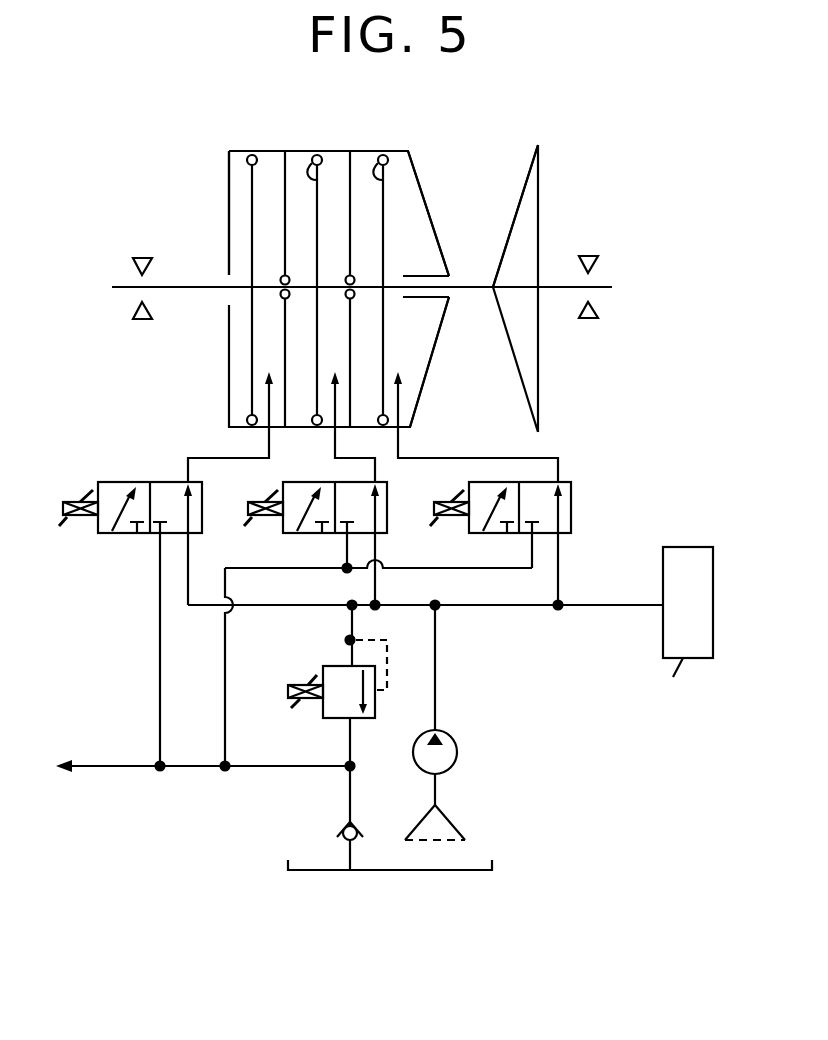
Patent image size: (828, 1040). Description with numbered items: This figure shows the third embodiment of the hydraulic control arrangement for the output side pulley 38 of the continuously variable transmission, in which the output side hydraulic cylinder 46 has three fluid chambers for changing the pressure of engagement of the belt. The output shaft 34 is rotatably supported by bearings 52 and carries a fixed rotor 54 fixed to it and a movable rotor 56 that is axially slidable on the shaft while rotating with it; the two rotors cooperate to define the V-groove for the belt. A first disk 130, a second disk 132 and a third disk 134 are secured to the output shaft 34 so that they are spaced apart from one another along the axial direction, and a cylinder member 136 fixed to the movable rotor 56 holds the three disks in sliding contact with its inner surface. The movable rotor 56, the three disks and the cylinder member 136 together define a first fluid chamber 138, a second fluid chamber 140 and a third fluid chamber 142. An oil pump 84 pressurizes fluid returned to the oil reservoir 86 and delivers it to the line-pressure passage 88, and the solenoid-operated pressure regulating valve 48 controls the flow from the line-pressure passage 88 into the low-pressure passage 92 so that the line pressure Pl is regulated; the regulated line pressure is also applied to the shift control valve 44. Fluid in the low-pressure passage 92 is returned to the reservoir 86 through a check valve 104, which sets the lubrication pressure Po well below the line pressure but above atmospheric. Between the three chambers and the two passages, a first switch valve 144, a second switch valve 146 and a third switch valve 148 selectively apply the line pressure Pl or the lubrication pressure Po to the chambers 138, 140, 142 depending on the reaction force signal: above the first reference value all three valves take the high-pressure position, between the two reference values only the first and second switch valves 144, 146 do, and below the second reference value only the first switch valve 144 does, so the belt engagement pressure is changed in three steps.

The output shaft 34 is at (563, 292).
The output side pulley 38 is at (576, 130).
The shift control valve 44 is at (690, 558).
The output side hydraulic cylinder 46 is at (200, 193).
The pressure regulating valve 48 is at (330, 666).
The bearings 52 is at (142, 256).
The fixed rotor 54 is at (528, 210).
The movable rotor 56 is at (430, 210).
The oil pump 84 is at (458, 752).
The oil reservoir 86 is at (492, 860).
The line-pressure passage 88 is at (468, 607).
The low-pressure passage 92 is at (183, 770).
The check valve 104 is at (340, 828).
The first disk 130 is at (370, 150).
The second disk 132 is at (305, 150).
The third disk 134 is at (252, 187).
The cylinder member 136 is at (273, 150).
The first fluid chamber 138 is at (413, 377).
The second fluid chamber 140 is at (340, 348).
The third fluid chamber 142 is at (262, 347).
The first switch valve 144 is at (580, 472).
The second switch valve 146 is at (280, 548).
The third switch valve 148 is at (125, 550).